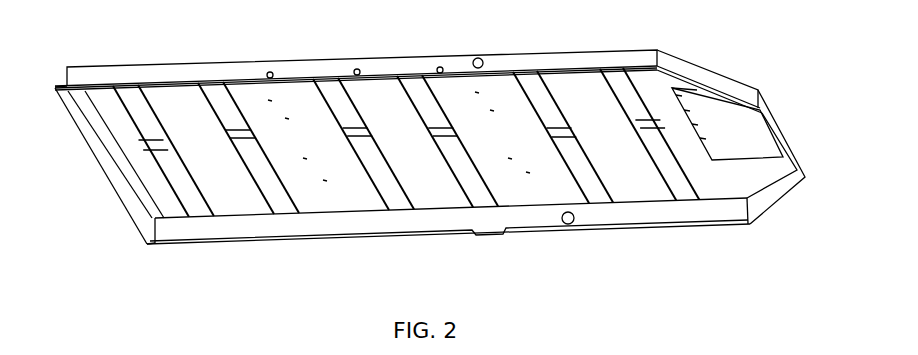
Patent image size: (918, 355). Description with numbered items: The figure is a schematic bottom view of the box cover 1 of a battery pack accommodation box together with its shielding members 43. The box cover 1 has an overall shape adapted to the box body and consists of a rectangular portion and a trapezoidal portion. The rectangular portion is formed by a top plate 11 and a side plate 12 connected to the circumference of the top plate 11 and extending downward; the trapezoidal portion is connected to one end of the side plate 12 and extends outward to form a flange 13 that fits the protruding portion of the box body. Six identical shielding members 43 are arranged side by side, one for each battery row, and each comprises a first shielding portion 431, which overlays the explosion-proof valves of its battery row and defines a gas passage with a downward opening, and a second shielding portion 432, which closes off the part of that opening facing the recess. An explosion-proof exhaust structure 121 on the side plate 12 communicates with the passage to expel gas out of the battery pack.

The box cover 1 is at (303, 70).
The top plate 11 is at (640, 192).
The side plate 12 is at (448, 241).
The explosion-proof exhaust structure 121 is at (570, 222).
The flange 13 is at (730, 80).
The shielding member 43 is at (193, 210).
The first shielding portion 431 is at (470, 190).
The second shielding portion 432 is at (547, 127).